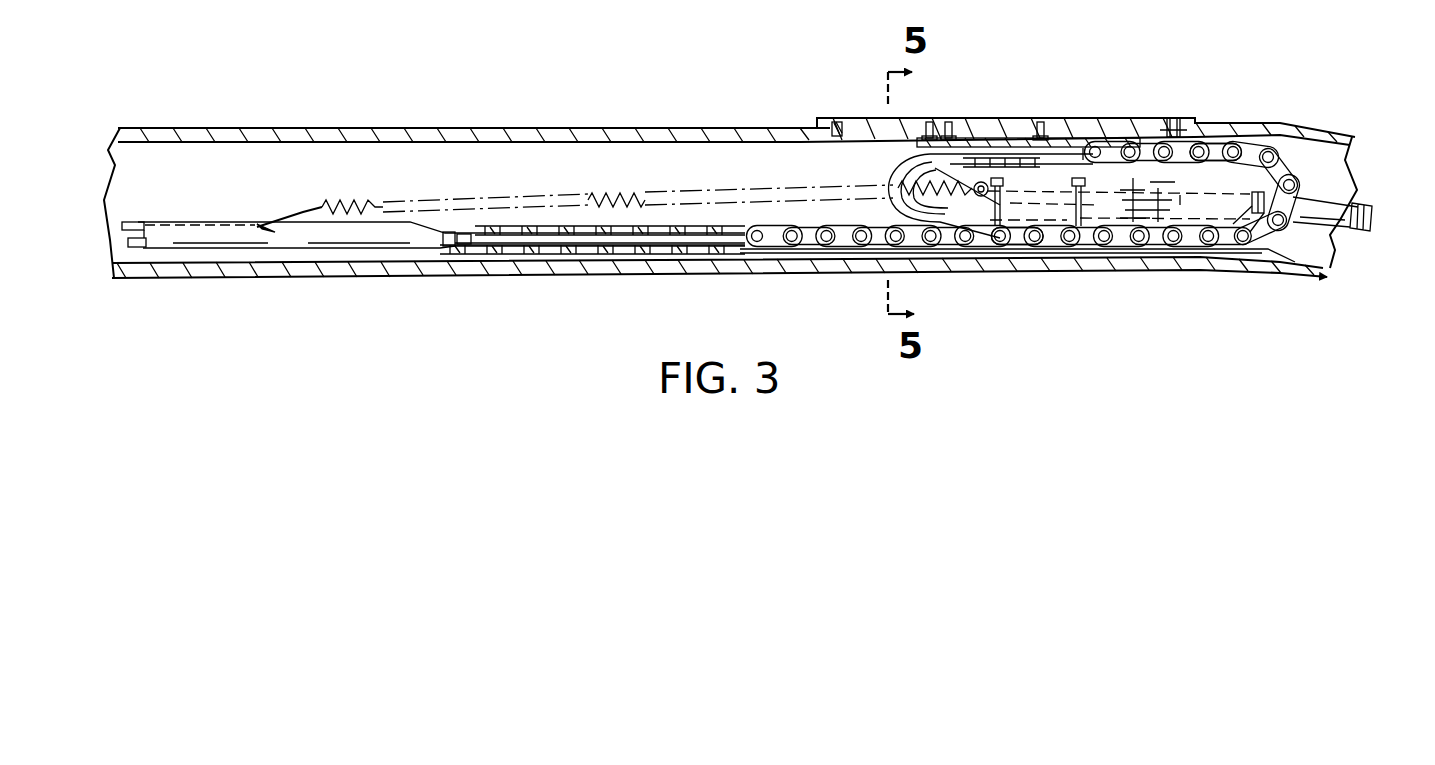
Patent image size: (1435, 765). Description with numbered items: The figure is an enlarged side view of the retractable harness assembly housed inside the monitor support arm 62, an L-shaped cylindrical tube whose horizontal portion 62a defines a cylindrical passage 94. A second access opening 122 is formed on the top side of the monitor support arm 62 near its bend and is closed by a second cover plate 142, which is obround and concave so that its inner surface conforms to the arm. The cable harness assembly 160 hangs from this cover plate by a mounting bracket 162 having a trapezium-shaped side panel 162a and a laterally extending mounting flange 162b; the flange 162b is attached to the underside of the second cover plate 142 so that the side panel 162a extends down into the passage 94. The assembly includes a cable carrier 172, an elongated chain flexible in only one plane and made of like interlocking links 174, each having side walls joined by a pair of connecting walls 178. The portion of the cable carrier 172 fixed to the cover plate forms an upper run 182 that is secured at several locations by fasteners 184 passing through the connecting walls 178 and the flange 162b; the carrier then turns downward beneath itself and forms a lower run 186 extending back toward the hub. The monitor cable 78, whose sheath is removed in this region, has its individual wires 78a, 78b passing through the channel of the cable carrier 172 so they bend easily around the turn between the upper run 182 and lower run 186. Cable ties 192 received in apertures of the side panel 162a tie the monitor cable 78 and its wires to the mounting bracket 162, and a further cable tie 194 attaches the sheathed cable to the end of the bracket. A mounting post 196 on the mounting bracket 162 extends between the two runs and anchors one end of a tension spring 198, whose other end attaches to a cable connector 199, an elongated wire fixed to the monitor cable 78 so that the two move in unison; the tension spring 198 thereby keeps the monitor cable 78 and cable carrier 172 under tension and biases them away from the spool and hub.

The monitor support arm 62 is at (487, 126).
The horizontal portion 62a is at (252, 137).
The cylindrical passage 94 is at (412, 158).
The monitor cable 78 is at (340, 237).
The individual wire 78a is at (505, 242).
The individual wire 78b is at (893, 176).
The cable connector 199 is at (132, 226).
The tension spring 198 is at (361, 197).
The connecting walls 178 is at (558, 228).
The interlocking links 174 is at (630, 253).
The lower run 186 is at (797, 248).
The cable carrier 172 is at (1010, 250).
The mounting bracket 162 is at (1233, 182).
The side panel 162a is at (1160, 180).
The mounting flange 162b is at (1083, 148).
The cable harness assembly 160 is at (1218, 142).
The second access opening 122 is at (880, 118).
The upper run 182 is at (1115, 143).
The second cover plate 142 is at (1132, 116).
The fasteners 184 is at (948, 122).
The mounting post 196 is at (980, 198).
The cable ties 192 is at (1067, 207).
The cable tie 194 is at (1265, 165).